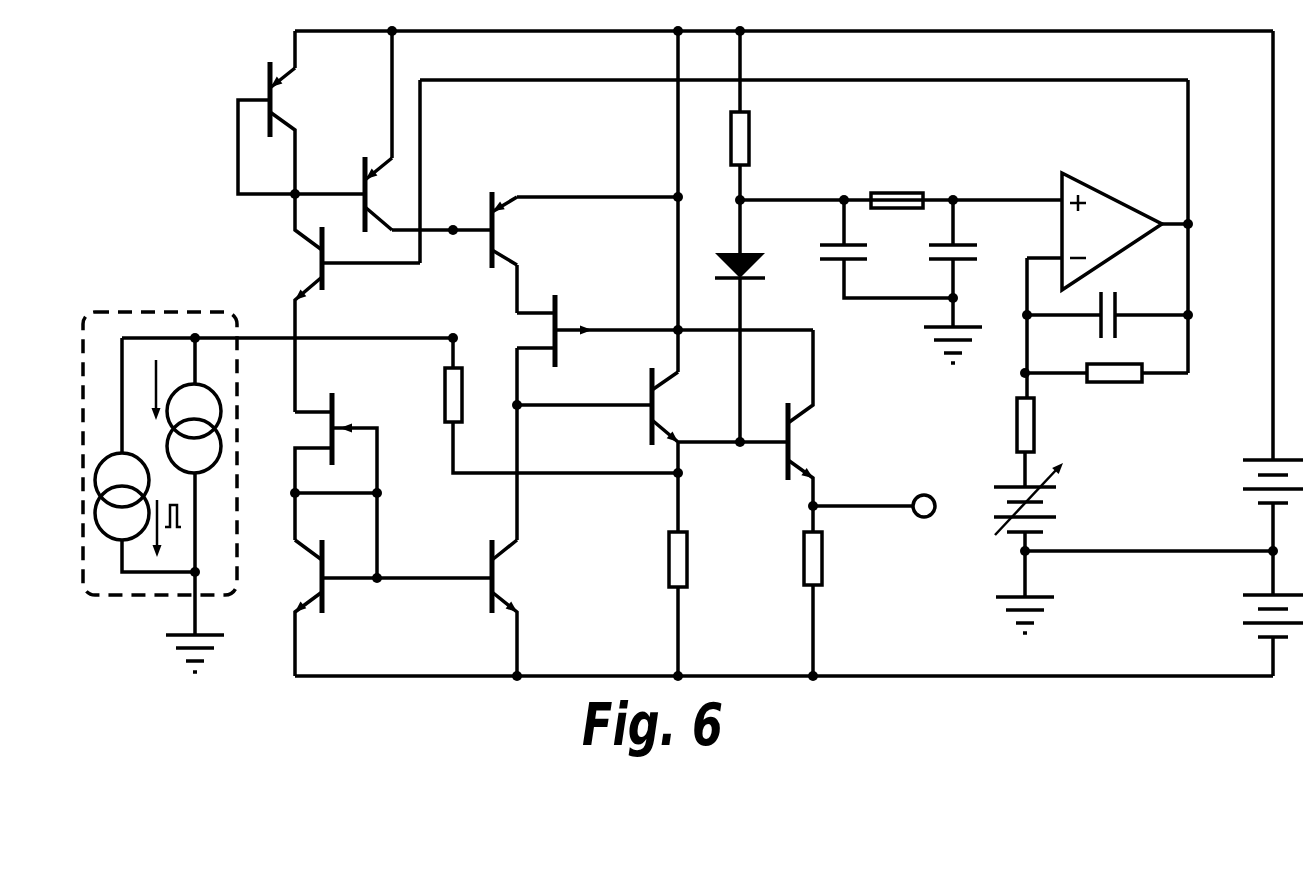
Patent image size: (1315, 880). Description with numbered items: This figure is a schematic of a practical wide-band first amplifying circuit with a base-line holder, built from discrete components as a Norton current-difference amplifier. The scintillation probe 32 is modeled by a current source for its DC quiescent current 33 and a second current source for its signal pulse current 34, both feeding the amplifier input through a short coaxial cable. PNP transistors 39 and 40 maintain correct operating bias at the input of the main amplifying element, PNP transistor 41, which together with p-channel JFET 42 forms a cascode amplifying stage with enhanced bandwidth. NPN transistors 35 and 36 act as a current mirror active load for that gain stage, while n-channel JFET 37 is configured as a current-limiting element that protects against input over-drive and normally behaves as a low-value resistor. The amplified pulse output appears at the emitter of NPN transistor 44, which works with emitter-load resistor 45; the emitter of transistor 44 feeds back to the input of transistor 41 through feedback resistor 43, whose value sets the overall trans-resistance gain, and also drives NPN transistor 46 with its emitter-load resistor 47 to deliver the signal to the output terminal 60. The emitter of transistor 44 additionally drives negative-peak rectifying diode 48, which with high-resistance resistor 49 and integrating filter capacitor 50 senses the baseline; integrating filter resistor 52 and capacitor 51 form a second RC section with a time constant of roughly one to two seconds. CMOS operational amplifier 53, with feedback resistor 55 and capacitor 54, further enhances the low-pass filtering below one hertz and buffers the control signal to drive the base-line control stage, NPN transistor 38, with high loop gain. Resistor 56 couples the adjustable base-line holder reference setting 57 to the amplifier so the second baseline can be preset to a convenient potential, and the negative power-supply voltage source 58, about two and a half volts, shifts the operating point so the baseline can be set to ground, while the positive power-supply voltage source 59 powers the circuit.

The scintillation probe 32 is at (160, 435).
The current source representing probe's DC quiescent current 33 is at (191, 486).
The current source representing probe's signal pulse current 34 is at (142, 456).
The NPN transistor 35 is at (393, 608).
The NPN transistor 36 is at (496, 610).
The N-channel junction FET 37 is at (336, 483).
The NPN transistor 38 is at (346, 303).
The PNP transistor 39 is at (301, 130).
The PNP transistor 40 is at (371, 178).
The PNP transistor 41 is at (585, 230).
The P-channel junction FET 42 is at (665, 329).
The feedback resistor 43 is at (547, 408).
The NPN transistor 44 is at (652, 450).
The emitter-load resistor 45 is at (660, 606).
The NPN transistor 46 is at (809, 431).
The emitter-load resistor 47 is at (795, 606).
The rectifying diode 48 is at (745, 347).
The resistor with high resistance 49 is at (896, 142).
The integrating filter capacitor 50 is at (885, 251).
The integrating filter capacitor 51 is at (957, 281).
The integrating filter resistor with high resistance 52 is at (898, 184).
The CMOS operational amplifier 53 is at (1110, 230).
The integrating filter capacitor 54 is at (1107, 313).
The feed-back resistor 55 is at (1104, 394).
The resistor 56 is at (1009, 442).
The base-line holder reference setting 57 is at (1136, 548).
The negative power-supply voltage source 58 is at (1257, 628).
The positive power-supply voltage source 59 is at (1270, 464).
The output terminal 60 is at (871, 485).